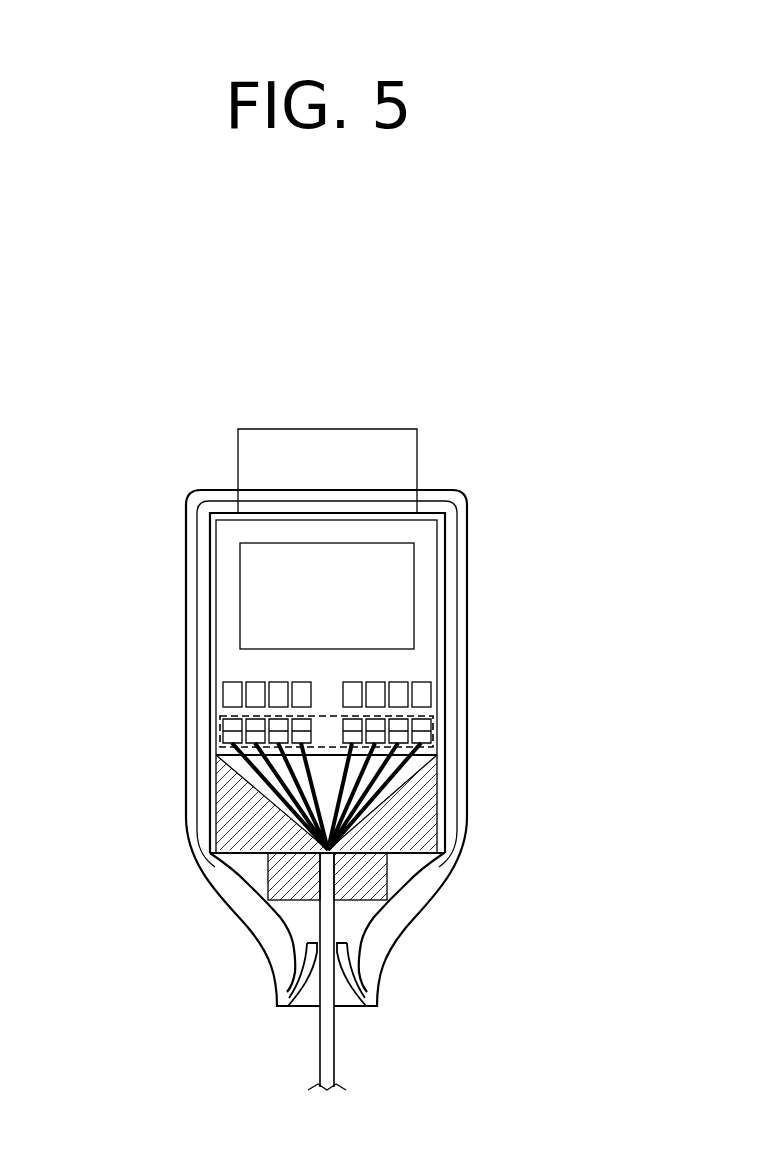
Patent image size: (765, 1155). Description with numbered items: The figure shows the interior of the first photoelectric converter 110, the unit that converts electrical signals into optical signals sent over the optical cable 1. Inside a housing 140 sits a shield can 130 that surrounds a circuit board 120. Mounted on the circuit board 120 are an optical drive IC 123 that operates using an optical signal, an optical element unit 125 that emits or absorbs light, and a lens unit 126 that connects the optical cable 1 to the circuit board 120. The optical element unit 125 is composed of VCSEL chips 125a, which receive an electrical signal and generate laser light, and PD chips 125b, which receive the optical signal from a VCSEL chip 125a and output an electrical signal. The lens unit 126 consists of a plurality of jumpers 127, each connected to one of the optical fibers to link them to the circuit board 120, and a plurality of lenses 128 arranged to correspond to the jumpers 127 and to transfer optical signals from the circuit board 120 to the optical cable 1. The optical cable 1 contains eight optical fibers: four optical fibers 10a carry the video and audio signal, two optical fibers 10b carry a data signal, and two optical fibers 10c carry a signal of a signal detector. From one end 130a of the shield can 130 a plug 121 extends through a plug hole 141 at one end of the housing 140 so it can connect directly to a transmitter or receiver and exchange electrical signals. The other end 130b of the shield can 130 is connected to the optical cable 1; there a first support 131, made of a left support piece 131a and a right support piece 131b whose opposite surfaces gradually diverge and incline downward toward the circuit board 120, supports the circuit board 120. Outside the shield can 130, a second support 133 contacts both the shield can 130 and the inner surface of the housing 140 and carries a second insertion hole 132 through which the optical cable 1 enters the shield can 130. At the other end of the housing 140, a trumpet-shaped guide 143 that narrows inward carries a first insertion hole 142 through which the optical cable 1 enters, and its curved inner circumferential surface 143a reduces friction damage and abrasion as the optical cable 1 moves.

The optical cable 1 is at (335, 1070).
The optical fibers for transferring a video signal 10a is at (315, 822).
The optical fibers for transmitting a data signal 10b is at (380, 797).
The optical fibers for transmitting a signal detector signal 10c is at (348, 782).
The first photoelectric converter 110 is at (328, 340).
The circuit board 120 is at (437, 650).
The plug 121 is at (407, 450).
The optical drive integrated circuit 123 is at (246, 558).
The optical element unit 125 is at (557, 703).
The VCSEL chip 125a is at (295, 677).
The PD chip 125b is at (352, 692).
The lens unit 126 is at (118, 757).
The jumper 127 is at (220, 738).
The lens 128 is at (220, 720).
The shield can 130 is at (452, 573).
The one end of the shield can 130a is at (442, 540).
The other end of the shield can 130b is at (410, 856).
The first support 131 is at (577, 813).
The left support piece 131a is at (260, 832).
The right support piece 131b is at (413, 818).
The second insertion hole 132 is at (318, 903).
The second support 133 is at (362, 883).
The housing 140 is at (463, 612).
The plug hole 141 is at (245, 497).
The first insertion hole 142 is at (307, 998).
The guide 143 is at (377, 988).
The inner circumferential surface 143a is at (350, 993).